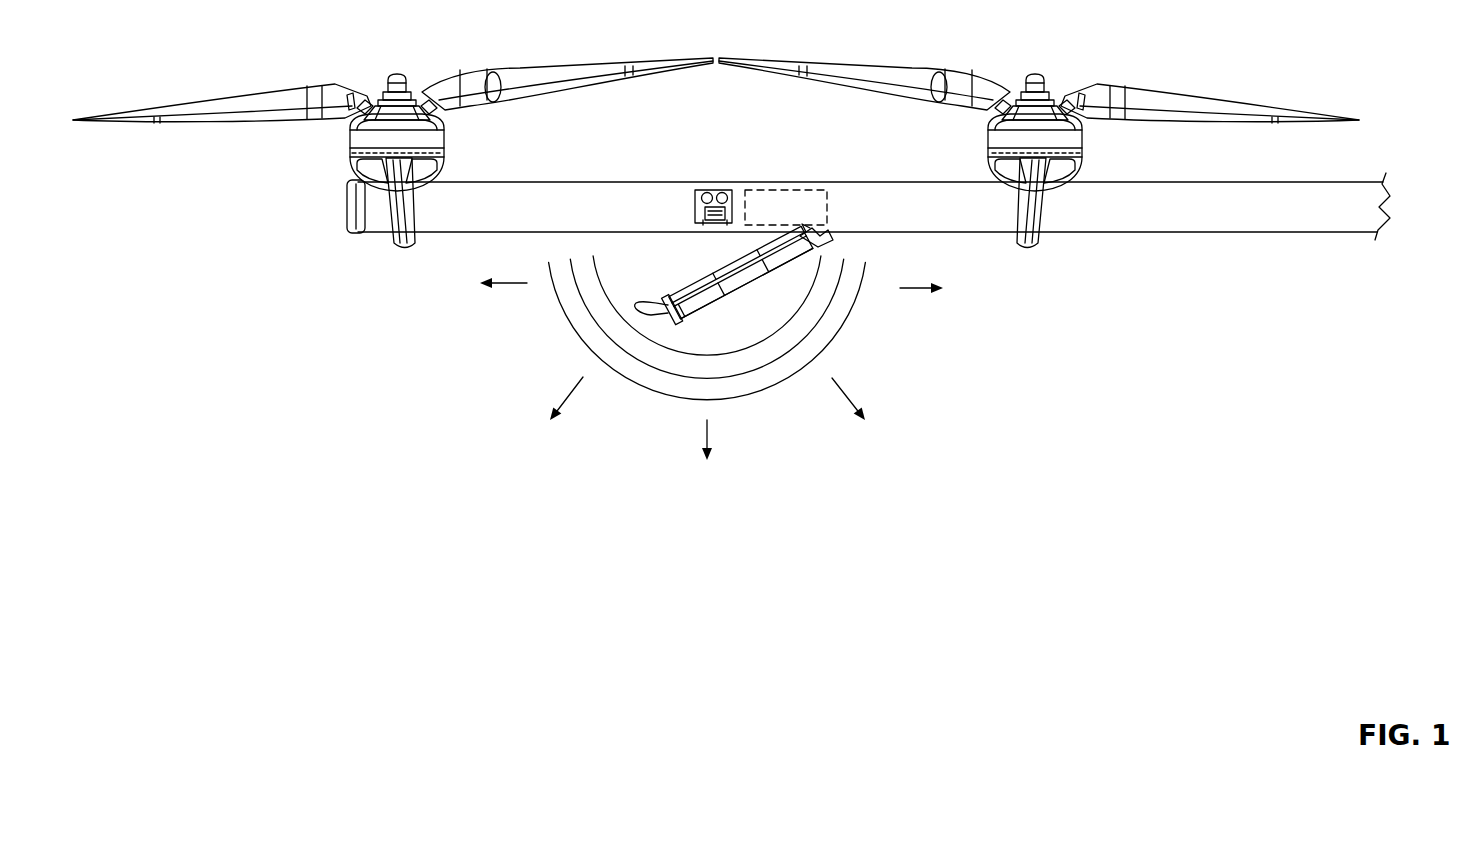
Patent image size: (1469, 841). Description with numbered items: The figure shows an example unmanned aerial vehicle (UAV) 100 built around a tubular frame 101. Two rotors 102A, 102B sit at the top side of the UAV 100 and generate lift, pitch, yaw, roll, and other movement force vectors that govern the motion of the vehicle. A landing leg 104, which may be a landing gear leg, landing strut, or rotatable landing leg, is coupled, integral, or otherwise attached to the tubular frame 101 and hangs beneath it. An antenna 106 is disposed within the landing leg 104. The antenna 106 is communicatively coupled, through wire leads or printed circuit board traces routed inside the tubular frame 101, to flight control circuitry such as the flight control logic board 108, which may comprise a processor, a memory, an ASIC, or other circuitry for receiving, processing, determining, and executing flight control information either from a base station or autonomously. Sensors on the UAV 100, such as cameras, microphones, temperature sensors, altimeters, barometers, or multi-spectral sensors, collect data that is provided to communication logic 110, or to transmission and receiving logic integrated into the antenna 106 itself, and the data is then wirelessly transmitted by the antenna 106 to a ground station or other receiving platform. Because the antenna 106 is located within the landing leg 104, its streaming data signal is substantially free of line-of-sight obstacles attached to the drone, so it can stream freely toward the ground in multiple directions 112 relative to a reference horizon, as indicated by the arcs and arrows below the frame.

The unmanned aerial vehicle 100 is at (1283, 62).
The tubular frame 101 is at (1253, 222).
The rotor 102A is at (390, 73).
The rotor 102B is at (1040, 73).
The landing leg 104 is at (704, 265).
The antenna 106 is at (725, 296).
The flight control logic board 108 is at (716, 188).
The communication logic 110 is at (786, 207).
The multiple directions 112 is at (711, 358).